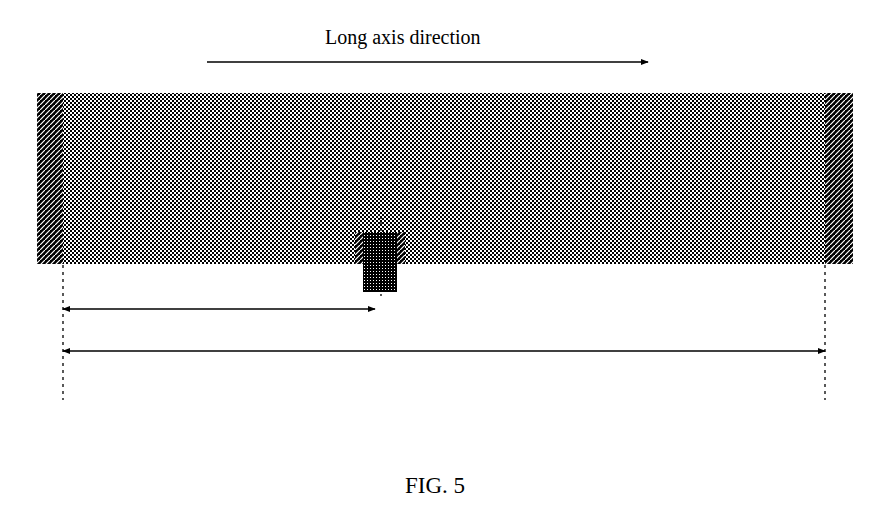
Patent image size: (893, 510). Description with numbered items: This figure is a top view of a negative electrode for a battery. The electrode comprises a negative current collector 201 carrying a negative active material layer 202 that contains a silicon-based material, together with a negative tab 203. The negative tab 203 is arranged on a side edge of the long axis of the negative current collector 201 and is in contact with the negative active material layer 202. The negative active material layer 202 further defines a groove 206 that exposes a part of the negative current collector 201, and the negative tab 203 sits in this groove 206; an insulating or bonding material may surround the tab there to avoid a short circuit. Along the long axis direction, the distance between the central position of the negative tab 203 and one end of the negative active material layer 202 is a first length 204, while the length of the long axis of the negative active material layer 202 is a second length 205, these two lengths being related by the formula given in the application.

The negative current collector 201 is at (835, 97).
The negative active material layer 202 is at (665, 248).
The negative tab 203 is at (398, 293).
The first length 204 is at (219, 326).
The second length 205 is at (444, 368).
The groove 206 is at (398, 245).